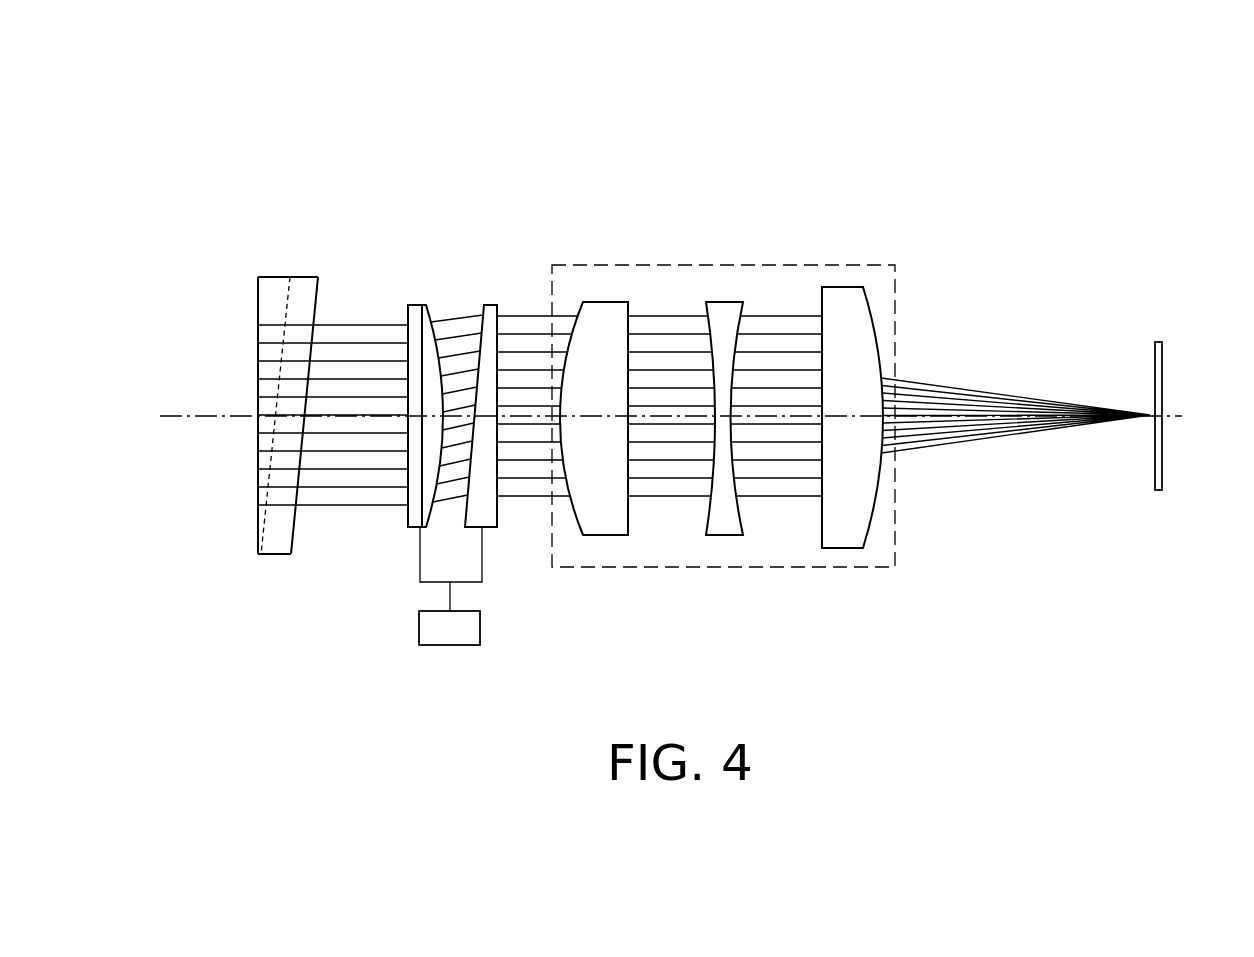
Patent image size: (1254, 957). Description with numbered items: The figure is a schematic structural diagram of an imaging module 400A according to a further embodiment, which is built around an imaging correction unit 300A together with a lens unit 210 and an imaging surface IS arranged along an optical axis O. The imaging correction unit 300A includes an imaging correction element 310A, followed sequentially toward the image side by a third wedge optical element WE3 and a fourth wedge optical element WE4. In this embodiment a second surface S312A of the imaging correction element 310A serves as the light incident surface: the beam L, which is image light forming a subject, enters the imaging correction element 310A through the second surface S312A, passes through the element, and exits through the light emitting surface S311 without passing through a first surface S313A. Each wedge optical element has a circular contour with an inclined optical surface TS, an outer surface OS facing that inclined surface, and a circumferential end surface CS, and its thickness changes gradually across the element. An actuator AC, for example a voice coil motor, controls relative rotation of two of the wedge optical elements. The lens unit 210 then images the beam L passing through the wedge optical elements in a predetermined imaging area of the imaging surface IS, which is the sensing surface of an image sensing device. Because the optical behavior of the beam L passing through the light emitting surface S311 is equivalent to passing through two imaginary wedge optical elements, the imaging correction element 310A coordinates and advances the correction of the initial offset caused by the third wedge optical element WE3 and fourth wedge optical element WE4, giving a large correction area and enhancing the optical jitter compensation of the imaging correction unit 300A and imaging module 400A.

The imaging module 400A is at (1181, 652).
The imaging correction unit 300A is at (538, 227).
The imaging correction element 310A is at (265, 390).
The light emitting surface S311 is at (294, 544).
The second surface S312A is at (255, 292).
The first surface S313A is at (285, 272).
The beam L is at (342, 343).
The third wedge optical element WE3 is at (428, 304).
The fourth wedge optical element WE4 is at (493, 304).
The circumferential end surface CS is at (412, 303).
The inclined optical surface TS is at (436, 348).
The outer surface OS is at (406, 494).
The actuator AC is at (458, 636).
The lens unit 210 is at (845, 266).
The imaging surface IS is at (1153, 362).
The optical axis O is at (1185, 420).